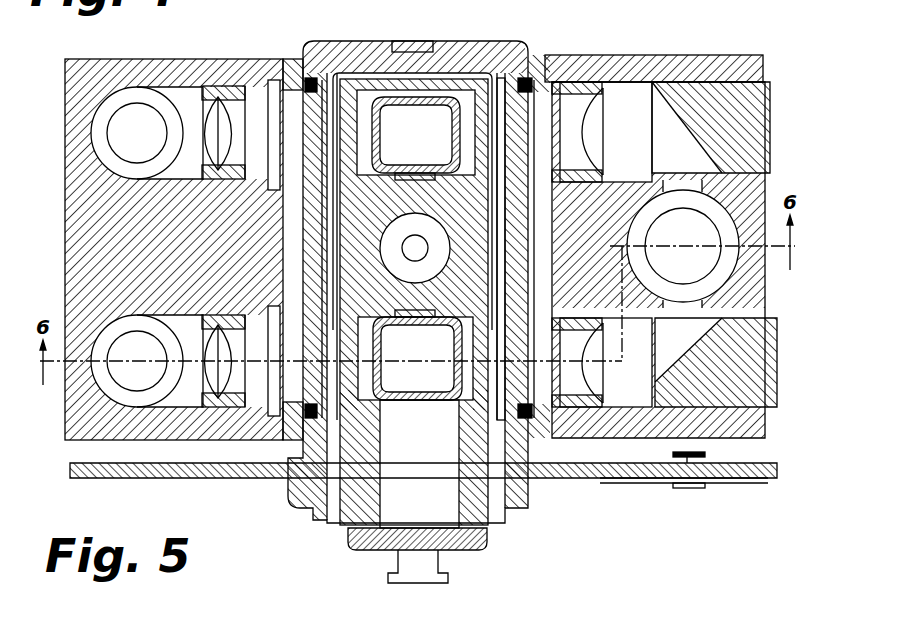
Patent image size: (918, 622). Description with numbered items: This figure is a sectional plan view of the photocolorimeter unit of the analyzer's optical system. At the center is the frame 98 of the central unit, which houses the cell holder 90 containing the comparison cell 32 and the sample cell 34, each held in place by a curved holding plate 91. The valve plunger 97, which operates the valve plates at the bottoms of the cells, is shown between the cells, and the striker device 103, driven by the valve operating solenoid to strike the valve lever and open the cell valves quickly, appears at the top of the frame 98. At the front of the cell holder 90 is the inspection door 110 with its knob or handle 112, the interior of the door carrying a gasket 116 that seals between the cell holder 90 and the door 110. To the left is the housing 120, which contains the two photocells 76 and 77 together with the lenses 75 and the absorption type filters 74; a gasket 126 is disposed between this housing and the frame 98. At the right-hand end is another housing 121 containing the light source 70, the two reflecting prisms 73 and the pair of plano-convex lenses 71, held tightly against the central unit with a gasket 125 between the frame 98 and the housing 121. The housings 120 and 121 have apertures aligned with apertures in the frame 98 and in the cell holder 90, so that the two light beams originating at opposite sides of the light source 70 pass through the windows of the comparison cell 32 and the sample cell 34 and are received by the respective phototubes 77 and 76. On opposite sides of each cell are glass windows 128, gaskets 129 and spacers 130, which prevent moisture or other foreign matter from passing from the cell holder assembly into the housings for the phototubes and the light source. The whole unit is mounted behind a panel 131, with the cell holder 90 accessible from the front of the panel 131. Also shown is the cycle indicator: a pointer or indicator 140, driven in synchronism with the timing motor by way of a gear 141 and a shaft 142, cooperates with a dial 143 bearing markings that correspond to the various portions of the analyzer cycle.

The comparison cell 32 is at (447, 145).
The sample cell 34 is at (412, 398).
The light source 70 is at (712, 268).
The plano-convex lens 71 is at (578, 141).
The reflecting prism 73 is at (660, 141).
The filter 74 is at (272, 92).
The lens 75 is at (211, 120).
The photocell 76 is at (108, 384).
The photocell 77 is at (108, 138).
The cell holder 90 is at (475, 75).
The curved holding plate 91 is at (413, 172).
The valve plunger 97 is at (422, 243).
The frame 98 is at (520, 62).
The striker device 103 is at (415, 42).
The inspection door 110 is at (350, 543).
The knob or handle 112 is at (395, 580).
The gasket 116 is at (419, 464).
The housing 120 is at (92, 287).
The housing 121 is at (612, 62).
The gasket 125 is at (545, 66).
The gasket 126 is at (292, 72).
The glass window 128 is at (320, 90).
The gasket 129 is at (332, 85).
The spacer 130 is at (310, 78).
The panel 131 is at (208, 468).
The pointer or indicator 140 is at (690, 489).
The gear 141 is at (672, 454).
The shaft 142 is at (692, 460).
The dial 143 is at (655, 482).